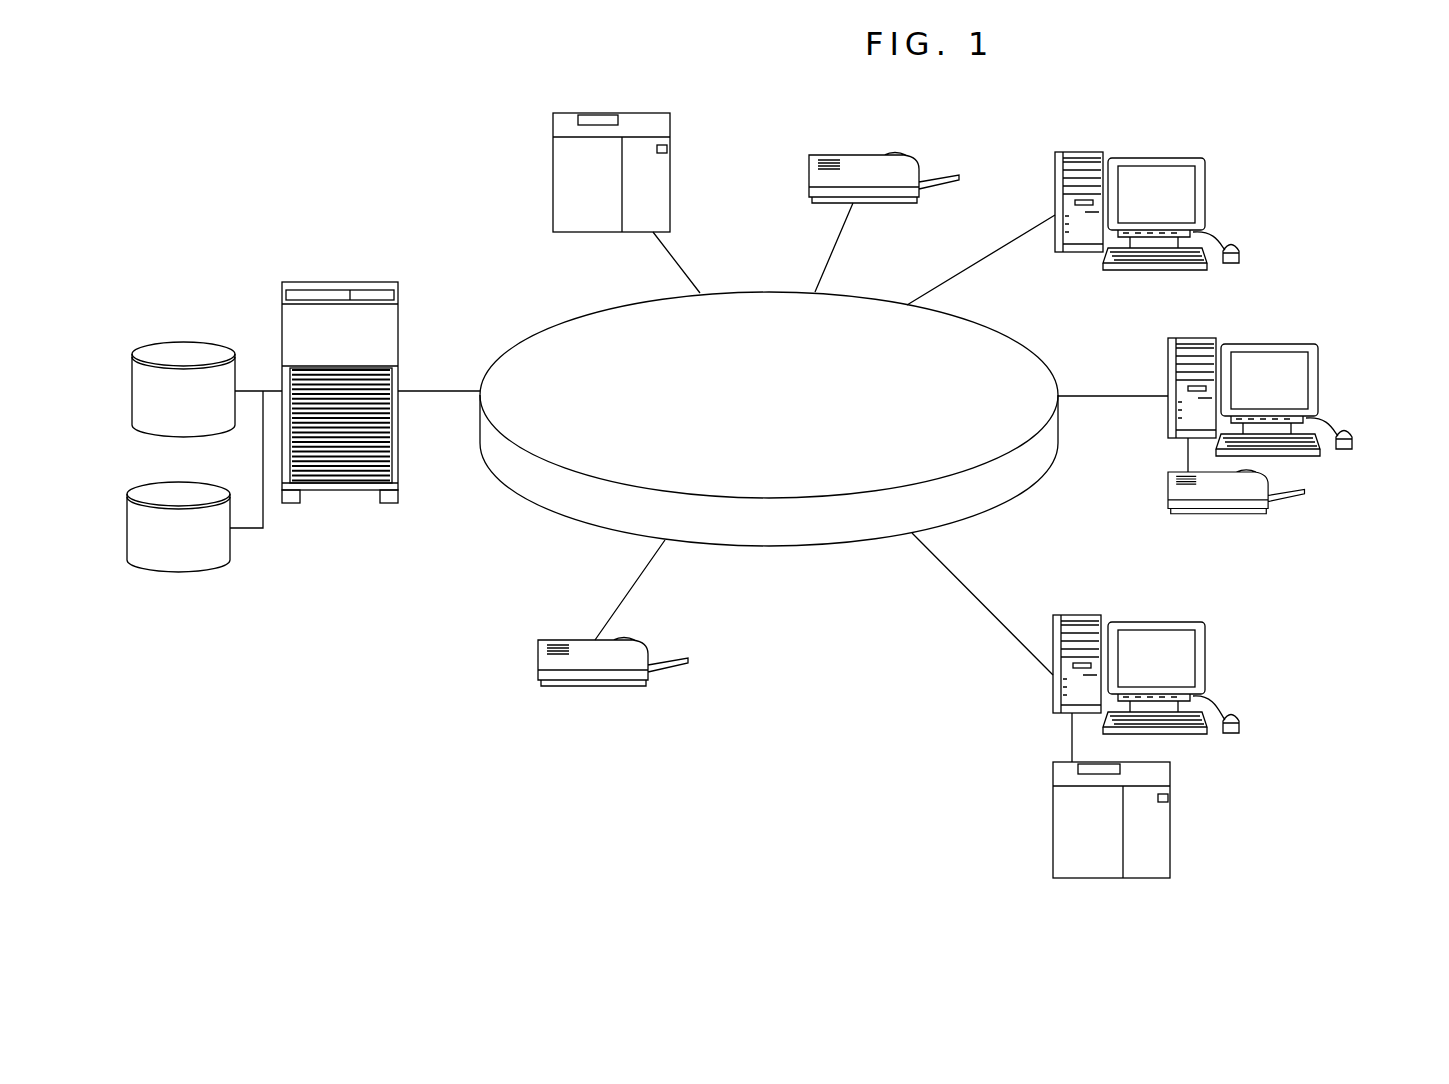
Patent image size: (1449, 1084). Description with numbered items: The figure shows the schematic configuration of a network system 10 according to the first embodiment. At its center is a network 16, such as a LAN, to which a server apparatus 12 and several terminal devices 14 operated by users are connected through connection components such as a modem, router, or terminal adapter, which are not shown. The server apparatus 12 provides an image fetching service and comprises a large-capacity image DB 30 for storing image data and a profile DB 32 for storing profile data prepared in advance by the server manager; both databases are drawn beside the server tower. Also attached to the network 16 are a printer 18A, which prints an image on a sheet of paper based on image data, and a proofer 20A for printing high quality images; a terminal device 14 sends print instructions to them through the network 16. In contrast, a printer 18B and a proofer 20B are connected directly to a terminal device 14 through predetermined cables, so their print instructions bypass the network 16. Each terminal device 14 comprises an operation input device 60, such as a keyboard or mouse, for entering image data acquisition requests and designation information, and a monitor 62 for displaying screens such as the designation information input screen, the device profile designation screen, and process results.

The network system 10 is at (1368, 120).
The server apparatus 12 is at (261, 474).
The terminal device 14 is at (1226, 457).
The network 16 is at (783, 439).
The printer 18A is at (870, 153).
The printer 18B is at (1305, 493).
The proofer 20A is at (654, 113).
The proofer 20B is at (1170, 815).
The image DB 30 is at (178, 430).
The profile DB 32 is at (177, 546).
The operation input device 60 is at (1249, 251).
The monitor 62 is at (1200, 190).